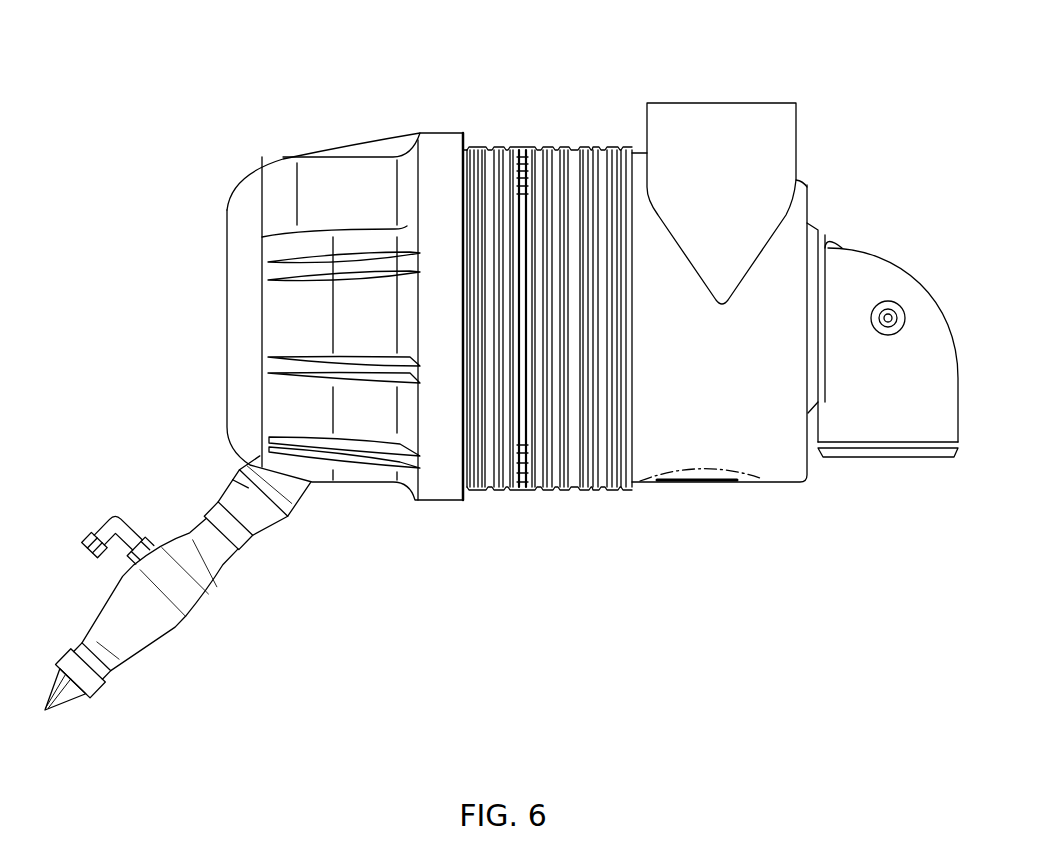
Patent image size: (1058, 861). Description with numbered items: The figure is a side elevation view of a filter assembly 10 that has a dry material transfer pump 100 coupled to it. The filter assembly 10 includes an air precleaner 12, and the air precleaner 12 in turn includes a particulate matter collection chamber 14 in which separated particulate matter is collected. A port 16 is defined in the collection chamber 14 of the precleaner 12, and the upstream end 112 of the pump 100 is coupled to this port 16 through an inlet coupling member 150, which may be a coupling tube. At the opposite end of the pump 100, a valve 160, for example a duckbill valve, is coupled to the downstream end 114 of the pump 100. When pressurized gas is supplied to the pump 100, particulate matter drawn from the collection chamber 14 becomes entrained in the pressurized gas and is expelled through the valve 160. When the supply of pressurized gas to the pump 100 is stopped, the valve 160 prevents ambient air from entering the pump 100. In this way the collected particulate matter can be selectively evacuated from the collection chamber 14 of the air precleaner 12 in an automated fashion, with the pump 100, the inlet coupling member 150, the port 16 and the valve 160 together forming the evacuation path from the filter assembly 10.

The filter assembly 10 is at (833, 76).
The air precleaner 12 is at (523, 124).
The particulate matter collection chamber 14 is at (287, 192).
The port 16 is at (272, 485).
The pump 100 is at (201, 641).
The upstream end 112 is at (198, 527).
The downstream end 114 is at (92, 655).
The inlet coupling member 150 is at (233, 478).
The valve 160 is at (90, 680).